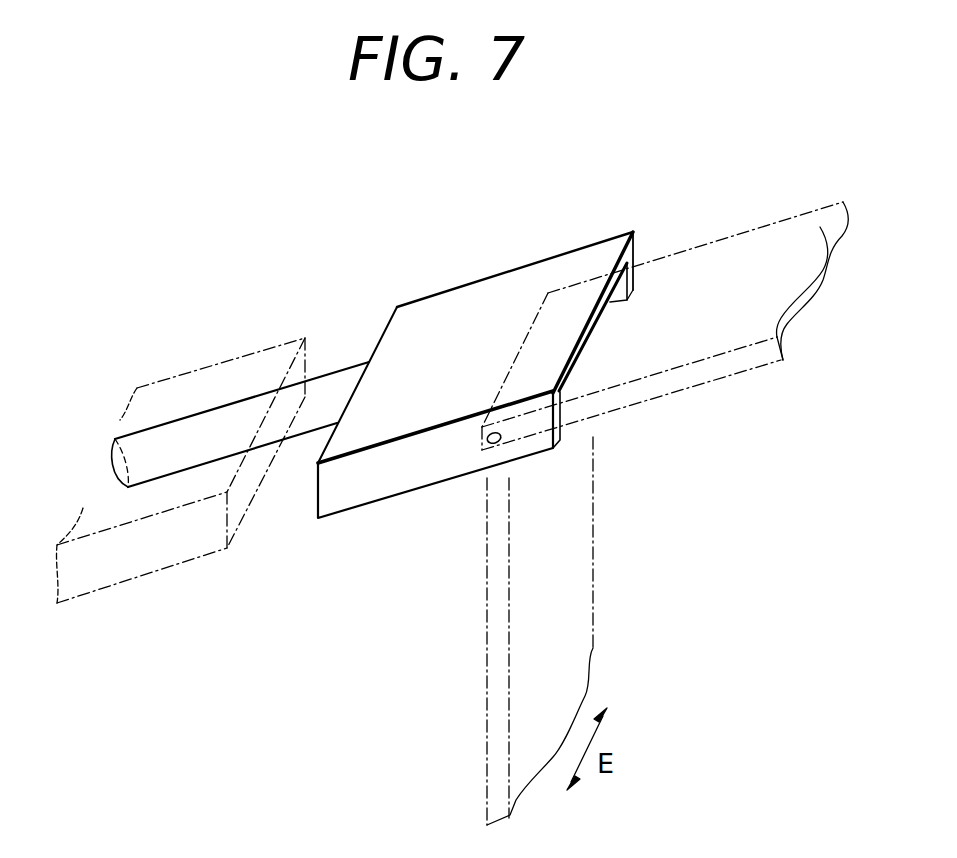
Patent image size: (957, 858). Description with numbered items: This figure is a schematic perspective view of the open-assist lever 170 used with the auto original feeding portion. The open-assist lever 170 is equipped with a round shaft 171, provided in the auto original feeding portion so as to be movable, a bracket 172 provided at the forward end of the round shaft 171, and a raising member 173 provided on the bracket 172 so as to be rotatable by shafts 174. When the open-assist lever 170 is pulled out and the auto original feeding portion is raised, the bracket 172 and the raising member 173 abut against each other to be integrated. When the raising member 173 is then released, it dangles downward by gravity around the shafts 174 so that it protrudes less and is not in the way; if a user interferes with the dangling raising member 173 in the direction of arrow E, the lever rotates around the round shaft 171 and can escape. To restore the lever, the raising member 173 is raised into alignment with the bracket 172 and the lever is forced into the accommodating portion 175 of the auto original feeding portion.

The open-assist lever 170 is at (341, 318).
The round shaft 171 is at (217, 425).
The bracket 172 is at (505, 283).
The raising member 173 is at (702, 254).
The shafts 174 is at (490, 438).
The accommodating portion 175 is at (242, 508).